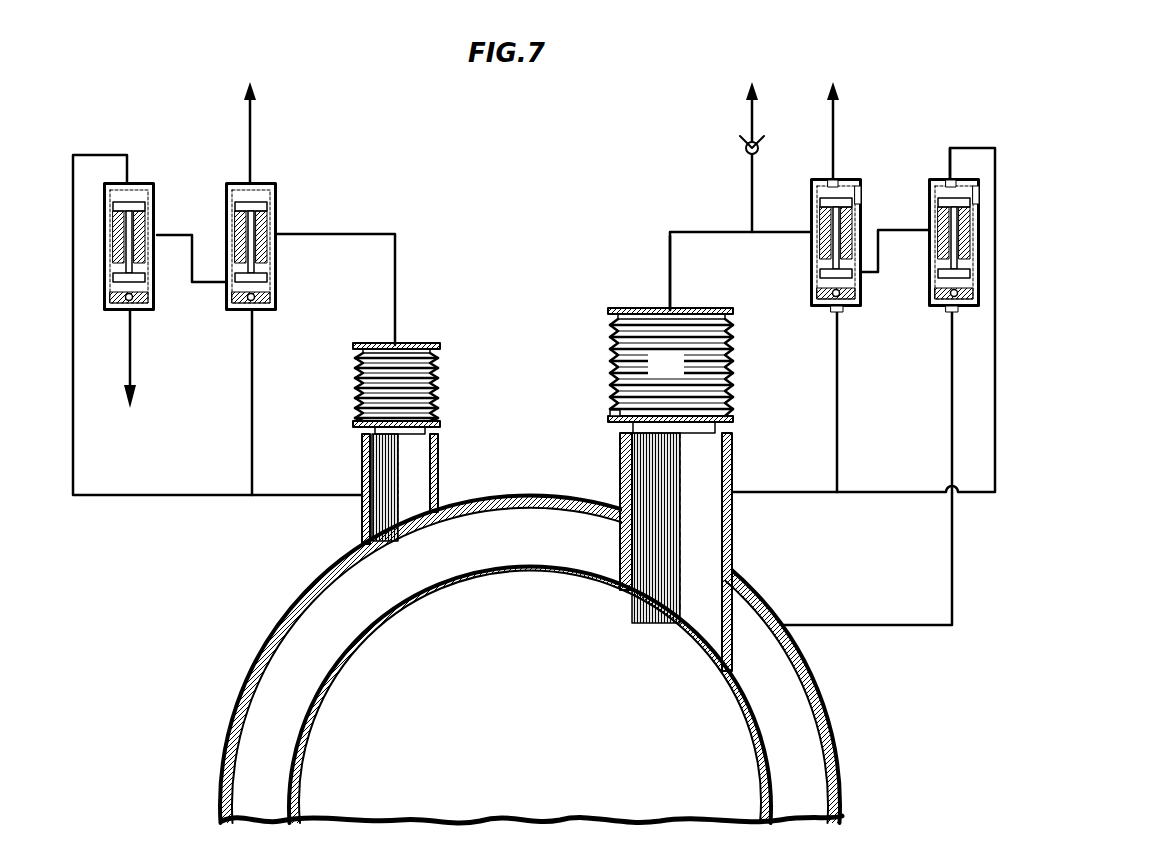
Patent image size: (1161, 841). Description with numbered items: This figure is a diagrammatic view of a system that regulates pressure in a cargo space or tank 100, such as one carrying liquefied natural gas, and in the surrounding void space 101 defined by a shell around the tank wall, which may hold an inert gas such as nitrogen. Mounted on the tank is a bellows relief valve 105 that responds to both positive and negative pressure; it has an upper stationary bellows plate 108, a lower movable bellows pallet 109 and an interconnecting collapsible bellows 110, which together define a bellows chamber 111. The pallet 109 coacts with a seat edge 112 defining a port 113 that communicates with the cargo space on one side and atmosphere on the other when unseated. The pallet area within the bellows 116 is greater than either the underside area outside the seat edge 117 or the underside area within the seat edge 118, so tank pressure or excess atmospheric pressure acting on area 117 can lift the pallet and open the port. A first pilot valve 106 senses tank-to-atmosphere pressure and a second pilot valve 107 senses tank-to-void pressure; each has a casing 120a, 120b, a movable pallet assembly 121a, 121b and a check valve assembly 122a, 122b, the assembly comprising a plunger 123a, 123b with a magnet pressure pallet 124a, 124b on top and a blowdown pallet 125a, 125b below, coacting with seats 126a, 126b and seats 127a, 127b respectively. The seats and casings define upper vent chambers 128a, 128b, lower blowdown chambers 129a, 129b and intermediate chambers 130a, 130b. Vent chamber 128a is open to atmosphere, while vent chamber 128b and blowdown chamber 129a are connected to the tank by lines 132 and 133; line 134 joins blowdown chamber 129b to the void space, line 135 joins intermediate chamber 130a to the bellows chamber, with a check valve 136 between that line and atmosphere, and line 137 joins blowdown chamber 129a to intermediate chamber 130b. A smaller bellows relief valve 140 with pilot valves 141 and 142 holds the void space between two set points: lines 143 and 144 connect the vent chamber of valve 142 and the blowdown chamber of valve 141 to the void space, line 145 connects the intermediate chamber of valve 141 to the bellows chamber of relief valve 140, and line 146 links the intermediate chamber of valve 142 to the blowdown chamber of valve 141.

The cargo space or tank 100 is at (526, 636).
The void space 101 is at (518, 549).
The bellows relief valve 105 is at (661, 465).
The first pilot valve 106 is at (836, 150).
The second pilot valve 107 is at (949, 176).
The upper stationary bellows plate 108 is at (698, 308).
The lower movable bellows pallet 109 is at (733, 419).
The collapsible wall or bellows 110 is at (733, 313).
The bellows chamber 111 is at (669, 365).
The seat edge 112 is at (612, 413).
The port 113 is at (620, 456).
The upper side area within the bellows 116 is at (727, 373).
The lower side area outside the seat edge 117 is at (732, 437).
The lower side area within the seat edge 118 is at (700, 445).
The casing 120a is at (805, 219).
The casing 120b is at (929, 246).
The movable pallet assembly 121a is at (817, 215).
The movable pallet assembly 121b is at (935, 215).
The check valve assembly 122a is at (820, 277).
The check valve assembly 122b is at (946, 278).
The plunger 123a is at (822, 250).
The plunger 123b is at (940, 260).
The magnet pressure pallet 124a is at (826, 197).
The magnet pressure pallet 124b is at (944, 197).
The blowdown pallet 125a is at (845, 308).
The blowdown pallet 125b is at (952, 318).
The seat 126a is at (834, 206).
The seat 126b is at (950, 206).
The seat 127a is at (812, 290).
The seat 127b is at (934, 292).
The upper vent chamber 128a is at (832, 178).
The upper vent chamber 128b is at (946, 178).
The lower blowdown chamber 129a is at (828, 306).
The lower blowdown chamber 129b is at (953, 300).
The intermediate chamber 130a is at (858, 196).
The intermediate chamber 130b is at (976, 196).
The line 132 is at (888, 490).
The line 133 is at (836, 421).
The line 134 is at (951, 549).
The line 135 is at (670, 231).
The check valve 136 is at (745, 142).
The line 137 is at (892, 231).
The bellows relief valve 140 is at (430, 338).
The pilot valve 141 is at (278, 180).
The pilot valve 142 is at (140, 180).
The line 143 is at (150, 493).
The line 144 is at (254, 352).
The line 145 is at (332, 233).
The line 146 is at (192, 233).